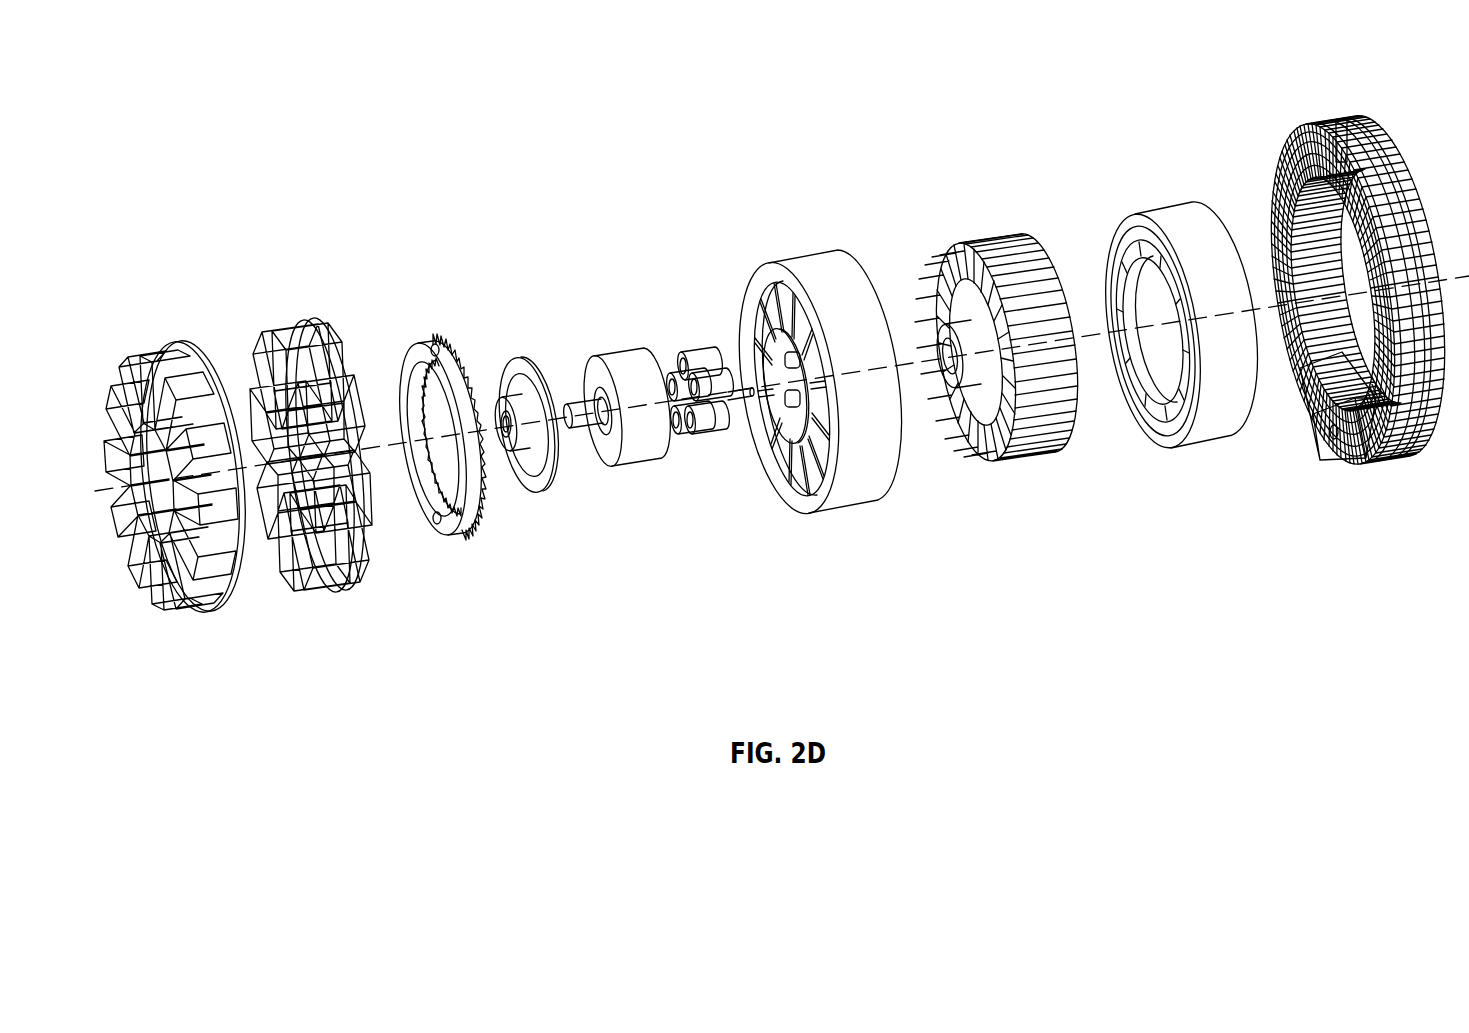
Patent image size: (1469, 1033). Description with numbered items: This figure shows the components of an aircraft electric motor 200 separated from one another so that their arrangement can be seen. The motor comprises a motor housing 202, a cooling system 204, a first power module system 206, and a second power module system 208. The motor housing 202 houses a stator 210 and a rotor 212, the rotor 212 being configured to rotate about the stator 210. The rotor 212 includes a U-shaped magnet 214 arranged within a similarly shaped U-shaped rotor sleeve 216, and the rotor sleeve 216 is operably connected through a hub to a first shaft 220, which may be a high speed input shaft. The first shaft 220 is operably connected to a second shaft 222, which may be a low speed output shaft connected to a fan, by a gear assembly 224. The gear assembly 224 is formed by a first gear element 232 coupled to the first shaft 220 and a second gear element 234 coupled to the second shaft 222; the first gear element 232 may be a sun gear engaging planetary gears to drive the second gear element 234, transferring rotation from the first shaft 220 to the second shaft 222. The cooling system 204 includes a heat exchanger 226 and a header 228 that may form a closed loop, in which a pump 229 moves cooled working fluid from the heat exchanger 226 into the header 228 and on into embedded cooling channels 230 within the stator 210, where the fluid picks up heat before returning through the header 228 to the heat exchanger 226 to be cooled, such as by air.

The aircraft electric motor 200 is at (207, 156).
The motor housing 202 is at (810, 262).
The cooling system 204 is at (912, 315).
The first power module system 206 is at (283, 330).
The second power module system 208 is at (181, 348).
The stator 210 is at (1020, 325).
The rotor 212 is at (614, 218).
The U-shaped magnet 214 is at (1152, 430).
The rotor sleeve 216 is at (1185, 212).
The first shaft 220 is at (712, 443).
The second shaft 222 is at (585, 425).
The gear assembly 224 is at (703, 285).
The heat exchanger 226 is at (1392, 455).
The header 228 is at (450, 525).
The pump 229 is at (1326, 415).
The embedded cooling channels 230 is at (1077, 388).
The first gear element 232 is at (710, 350).
The second gear element 234 is at (603, 355).